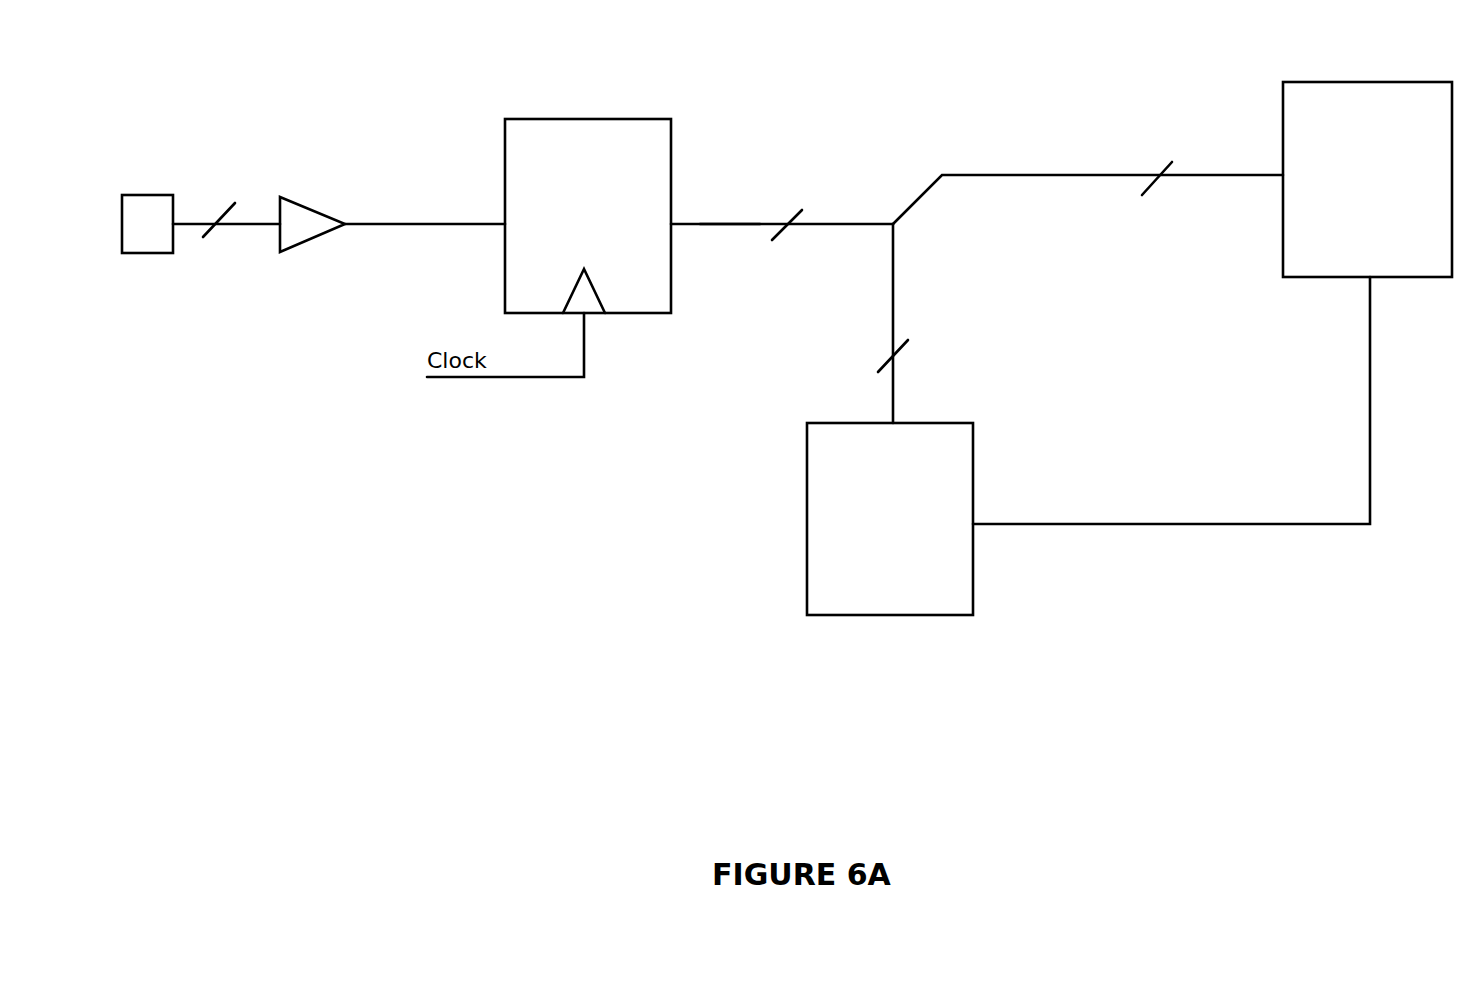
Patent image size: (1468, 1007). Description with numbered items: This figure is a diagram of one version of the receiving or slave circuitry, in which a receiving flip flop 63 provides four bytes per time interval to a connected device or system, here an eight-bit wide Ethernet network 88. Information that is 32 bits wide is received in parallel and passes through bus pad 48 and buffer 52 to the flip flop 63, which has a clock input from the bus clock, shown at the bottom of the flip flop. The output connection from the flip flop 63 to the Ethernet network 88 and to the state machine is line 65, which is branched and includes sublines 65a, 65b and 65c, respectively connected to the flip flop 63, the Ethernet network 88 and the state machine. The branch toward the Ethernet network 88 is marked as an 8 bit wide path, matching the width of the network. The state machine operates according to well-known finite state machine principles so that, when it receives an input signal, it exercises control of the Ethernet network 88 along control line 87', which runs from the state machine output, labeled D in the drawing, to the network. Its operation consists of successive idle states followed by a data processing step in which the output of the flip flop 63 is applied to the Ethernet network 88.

The bus pad 48 is at (147, 193).
The 32 bits of information 32 is at (573, 270).
The buffer 52 is at (290, 200).
The flip flop 63 is at (567, 116).
The line 65 is at (727, 160).
The subline 65a is at (725, 230).
The subline 65b is at (1023, 175).
The subline 65c is at (892, 265).
The 8-bit wide path 8 is at (1168, 155).
The Ethernet network 88 is at (1360, 82).
The control line 87' is at (1171, 455).
The D signal D is at (1095, 524).